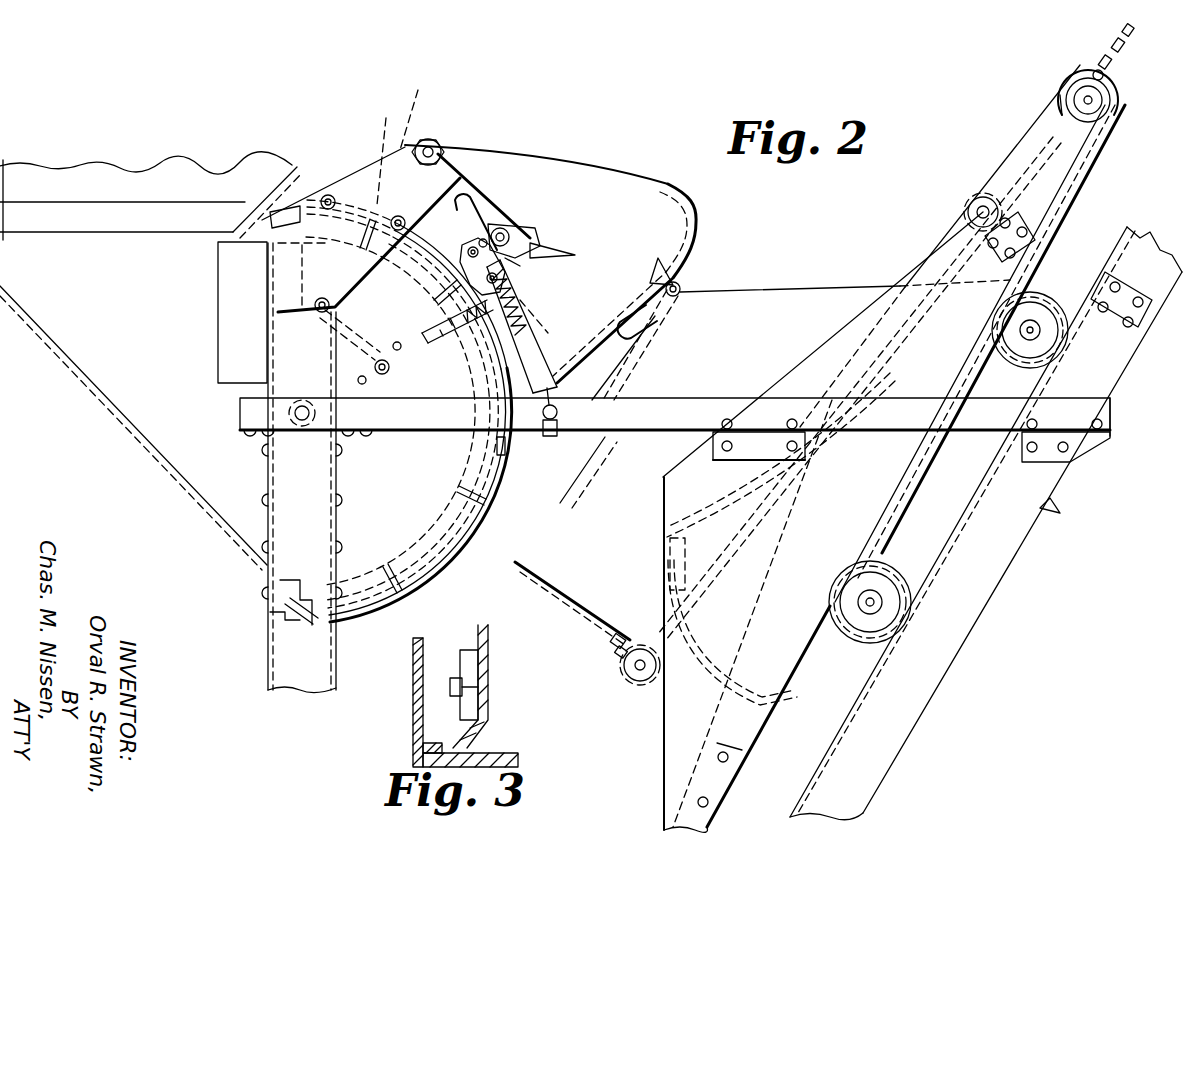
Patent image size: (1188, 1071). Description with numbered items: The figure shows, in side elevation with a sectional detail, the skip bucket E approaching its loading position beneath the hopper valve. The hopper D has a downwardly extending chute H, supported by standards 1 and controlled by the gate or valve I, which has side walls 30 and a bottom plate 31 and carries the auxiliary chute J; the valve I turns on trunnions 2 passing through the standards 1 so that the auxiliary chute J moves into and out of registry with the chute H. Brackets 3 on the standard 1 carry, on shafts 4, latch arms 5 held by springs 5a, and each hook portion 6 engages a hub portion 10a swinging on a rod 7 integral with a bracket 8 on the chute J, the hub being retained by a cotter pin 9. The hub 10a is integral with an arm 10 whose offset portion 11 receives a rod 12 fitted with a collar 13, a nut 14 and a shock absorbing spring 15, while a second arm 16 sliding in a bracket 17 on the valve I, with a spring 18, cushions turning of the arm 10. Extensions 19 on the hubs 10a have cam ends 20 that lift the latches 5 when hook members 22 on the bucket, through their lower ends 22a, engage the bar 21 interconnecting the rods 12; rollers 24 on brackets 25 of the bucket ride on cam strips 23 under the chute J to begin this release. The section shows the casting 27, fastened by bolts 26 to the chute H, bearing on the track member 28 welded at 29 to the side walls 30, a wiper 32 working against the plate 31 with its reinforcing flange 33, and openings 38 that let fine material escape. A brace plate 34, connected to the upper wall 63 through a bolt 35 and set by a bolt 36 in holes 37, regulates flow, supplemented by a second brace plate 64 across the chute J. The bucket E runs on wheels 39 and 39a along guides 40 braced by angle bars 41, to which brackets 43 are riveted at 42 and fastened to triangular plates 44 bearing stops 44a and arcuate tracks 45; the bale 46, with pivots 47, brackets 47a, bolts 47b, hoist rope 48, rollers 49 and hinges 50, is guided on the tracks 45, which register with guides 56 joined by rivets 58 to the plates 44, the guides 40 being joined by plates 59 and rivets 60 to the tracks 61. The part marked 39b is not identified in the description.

In FIG. 2, the hopper D is at (92, 182).
In FIG. 2, the chute H is at (78, 352).
In FIG. 2, the auxiliary chute J is at (560, 165).
In FIG. 2, the skip bucket E is at (793, 298).
In FIG. 2, the gate or valve I is at (383, 483).
In FIG. 2, the standards 1 is at (282, 663).
In FIG. 2, the trunnions 2 is at (292, 412).
In FIG. 2, the brackets 3 is at (360, 192).
In FIG. 2, the shafts 4 is at (437, 146).
In FIG. 2, the latch arms 5 is at (507, 210).
In FIG. 2, the spring 5a is at (418, 105).
In FIG. 2, the hook portion 6 is at (577, 255).
In FIG. 2, the rods 7 is at (503, 240).
In FIG. 2, the brackets 8 is at (478, 268).
In FIG. 2, the cotter pins 9 is at (503, 245).
In FIG. 2, the arms 10 is at (530, 296).
In FIG. 2, the boss or hub portions 10a is at (484, 243).
In FIG. 2, the offset portion 11 is at (548, 345).
In FIG. 2, the rod 12 is at (550, 332).
In FIG. 2, the collar 13 is at (520, 264).
In FIG. 2, the nut 14 is at (470, 262).
In FIG. 2, the shock absorbing spring 15 is at (523, 316).
In FIG. 2, the second arm 16 is at (430, 333).
In FIG. 2, the bracket 17 is at (451, 332).
In FIG. 2, the spring 18 is at (510, 320).
In FIG. 2, the extensions 19 is at (480, 203).
In FIG. 2, the cam ends 20 is at (455, 193).
In FIG. 2, the bar or pipe 21 is at (548, 437).
In FIG. 2, the hook members 22 is at (637, 320).
In FIG. 2, the lower ends of hooks 22a is at (580, 440).
In FIG. 2, the cam-shaped strips 23 is at (697, 215).
In FIG. 2, the rollers 24 is at (673, 258).
In FIG. 2, the offstanding brackets 25 is at (681, 296).
In FIG. 3, the bolts 26 is at (472, 687).
In FIG. 2, the casting 27 is at (357, 573).
In FIG. 3, the casting 27 is at (482, 725).
In FIG. 2, the track member or guide 28 is at (366, 608).
In FIG. 3, the track member or guide 28 is at (437, 743).
In FIG. 3, the weld 29 is at (430, 735).
In FIG. 2, the side walls 30 is at (437, 485).
In FIG. 3, the side walls 30 is at (413, 670).
In FIG. 2, the bottom plate 31 is at (462, 548).
In FIG. 3, the bottom plate 31 is at (508, 763).
In FIG. 2, the wiper 32 is at (300, 600).
In FIG. 2, the reinforcing flange 33 is at (283, 621).
In FIG. 2, the regulating and brace plate 34 is at (357, 318).
In FIG. 2, the bolt 35 is at (320, 322).
In FIG. 2, the bolt 36 is at (384, 375).
In FIG. 2, the holes 37 is at (398, 351).
In FIG. 2, the opening 38 is at (497, 441).
In FIG. 3, the opening 38 is at (420, 742).
In FIG. 2, the wheels 39 is at (860, 642).
In FIG. 2, the wheels 39a is at (1053, 303).
In FIG. 2, the pulley shaft 39b is at (1037, 338).
In FIG. 2, the guides 40 is at (977, 583).
In FIG. 2, the angle bars 41 is at (722, 410).
In FIG. 2, the rivets 42 is at (722, 425).
In FIG. 2, the bracket 43 is at (758, 437).
In FIG. 2, the plate 44 is at (677, 732).
In FIG. 2, the stops 44a is at (683, 587).
In FIG. 2, the arcuate guide tracks 45 is at (808, 488).
In FIG. 2, the bale 46 is at (648, 620).
In FIG. 2, the pivotal connections 47 is at (642, 672).
In FIG. 2, the brackets 47a is at (615, 635).
In FIG. 2, the bolts 47b is at (614, 650).
In FIG. 2, the hoist rope 48 is at (1100, 38).
In FIG. 2, the rollers 49 is at (1113, 107).
In FIG. 2, the hinge 50 is at (978, 200).
In FIG. 2, the guides 56 is at (1065, 163).
In FIG. 2, the bolts or rivets 58 is at (1030, 230).
In FIG. 2, the plates 59 is at (1140, 280).
In FIG. 2, the bolts or rivets 60 is at (1117, 285).
In FIG. 2, the guides or tracks 61 is at (1132, 282).
In FIG. 2, the upper wall 63 is at (277, 205).
In FIG. 2, the second brace plate 64 is at (380, 150).